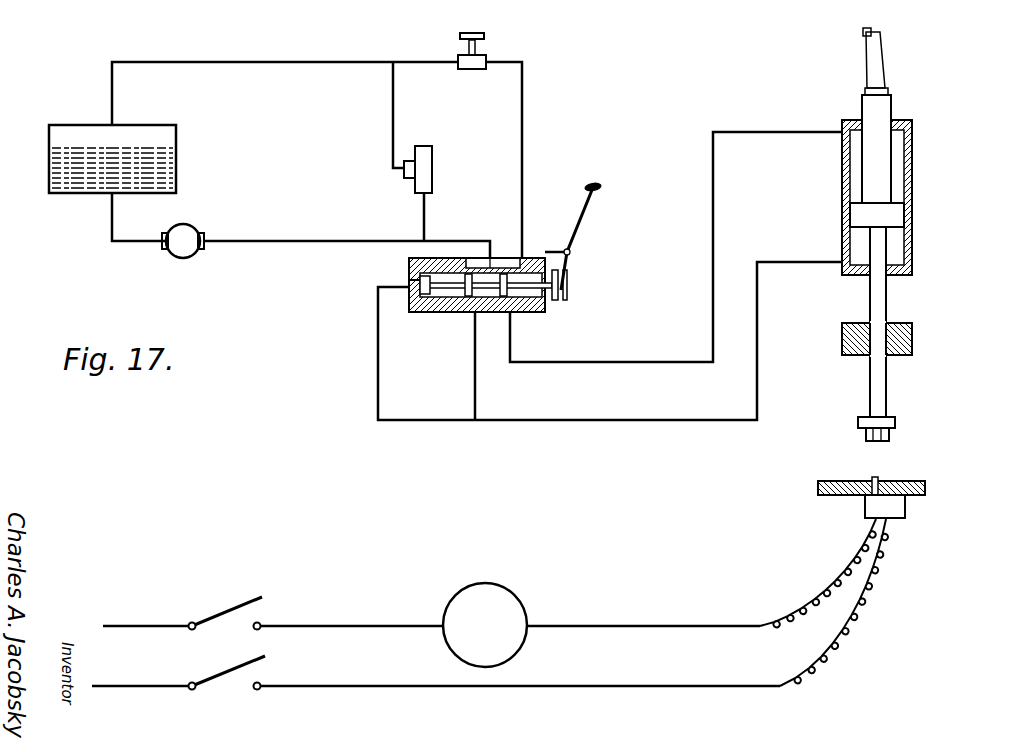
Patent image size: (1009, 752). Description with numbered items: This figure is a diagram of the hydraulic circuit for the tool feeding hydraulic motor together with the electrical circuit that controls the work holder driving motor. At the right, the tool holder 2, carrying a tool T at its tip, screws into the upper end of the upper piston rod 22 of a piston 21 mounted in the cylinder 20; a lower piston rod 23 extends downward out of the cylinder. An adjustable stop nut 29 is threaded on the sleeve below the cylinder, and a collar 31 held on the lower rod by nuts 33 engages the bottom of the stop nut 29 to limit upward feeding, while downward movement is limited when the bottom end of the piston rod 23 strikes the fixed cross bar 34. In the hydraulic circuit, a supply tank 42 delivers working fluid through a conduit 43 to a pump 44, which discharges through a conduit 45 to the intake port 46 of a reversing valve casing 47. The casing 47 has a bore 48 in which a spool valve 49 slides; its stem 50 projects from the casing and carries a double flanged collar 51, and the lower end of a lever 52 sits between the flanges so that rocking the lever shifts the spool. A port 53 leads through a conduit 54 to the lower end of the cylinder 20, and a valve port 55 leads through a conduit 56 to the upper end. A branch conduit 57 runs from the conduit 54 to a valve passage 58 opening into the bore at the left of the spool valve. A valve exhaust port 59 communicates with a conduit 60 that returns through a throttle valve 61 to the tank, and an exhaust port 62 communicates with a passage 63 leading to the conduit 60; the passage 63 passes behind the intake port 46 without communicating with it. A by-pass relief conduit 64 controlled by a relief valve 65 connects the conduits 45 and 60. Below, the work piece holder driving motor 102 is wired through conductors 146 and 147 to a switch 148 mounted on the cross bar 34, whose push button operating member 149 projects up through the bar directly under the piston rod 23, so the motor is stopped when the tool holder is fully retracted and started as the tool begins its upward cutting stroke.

The tool holder 2 is at (878, 62).
The tool tip T is at (860, 34).
The cylinder 20 is at (908, 152).
The piston 21 is at (886, 213).
The upper piston rod 22 is at (878, 106).
The lower piston rod 23 is at (876, 246).
The adjustable stop nut 29 is at (914, 337).
The collar 31 is at (892, 423).
The nuts 33 is at (891, 437).
The cross bar stop part 34 is at (926, 490).
The supply tank 42 is at (168, 133).
The conduit 43 is at (112, 228).
The pump 44 is at (190, 237).
The conduit 45 is at (287, 244).
The intake port 46 is at (485, 258).
The reversing valve casing 47 is at (408, 268).
The bore 48 is at (428, 300).
The spool valve 49 is at (478, 313).
The stem 50 is at (545, 306).
The double flanged collar 51 is at (569, 285).
The lever 52 is at (586, 215).
The port 53 is at (470, 300).
The conduit 54 is at (478, 396).
The valve port 55 is at (508, 312).
The conduit 56 is at (652, 362).
The branch conduit 57 is at (378, 401).
The valve passage 58 is at (410, 284).
The valve exhaust port 59 is at (527, 256).
The conduit 60 is at (524, 113).
The throttle valve 61 is at (480, 48).
The exhaust port 62 is at (412, 258).
The passage 63 is at (510, 257).
The by-pass relief conduit 64 is at (424, 210).
The relief valve 65 is at (428, 148).
The work piece holder driving motor 102 is at (496, 586).
The conductor 146 is at (613, 624).
The conductor 147 is at (621, 688).
The switch 148 is at (906, 508).
The push button operating member 149 is at (872, 480).